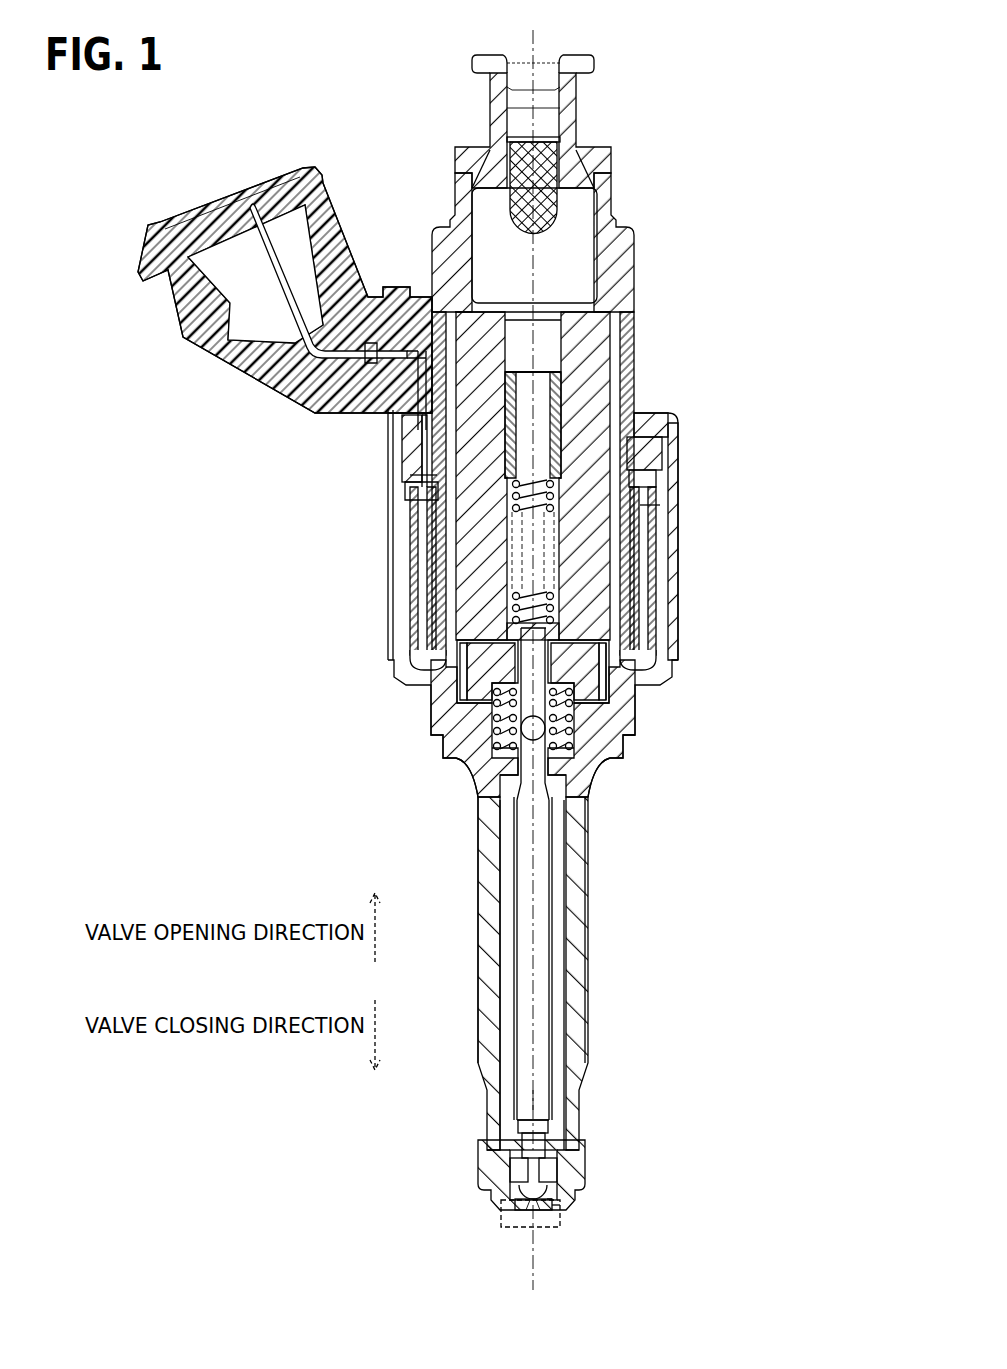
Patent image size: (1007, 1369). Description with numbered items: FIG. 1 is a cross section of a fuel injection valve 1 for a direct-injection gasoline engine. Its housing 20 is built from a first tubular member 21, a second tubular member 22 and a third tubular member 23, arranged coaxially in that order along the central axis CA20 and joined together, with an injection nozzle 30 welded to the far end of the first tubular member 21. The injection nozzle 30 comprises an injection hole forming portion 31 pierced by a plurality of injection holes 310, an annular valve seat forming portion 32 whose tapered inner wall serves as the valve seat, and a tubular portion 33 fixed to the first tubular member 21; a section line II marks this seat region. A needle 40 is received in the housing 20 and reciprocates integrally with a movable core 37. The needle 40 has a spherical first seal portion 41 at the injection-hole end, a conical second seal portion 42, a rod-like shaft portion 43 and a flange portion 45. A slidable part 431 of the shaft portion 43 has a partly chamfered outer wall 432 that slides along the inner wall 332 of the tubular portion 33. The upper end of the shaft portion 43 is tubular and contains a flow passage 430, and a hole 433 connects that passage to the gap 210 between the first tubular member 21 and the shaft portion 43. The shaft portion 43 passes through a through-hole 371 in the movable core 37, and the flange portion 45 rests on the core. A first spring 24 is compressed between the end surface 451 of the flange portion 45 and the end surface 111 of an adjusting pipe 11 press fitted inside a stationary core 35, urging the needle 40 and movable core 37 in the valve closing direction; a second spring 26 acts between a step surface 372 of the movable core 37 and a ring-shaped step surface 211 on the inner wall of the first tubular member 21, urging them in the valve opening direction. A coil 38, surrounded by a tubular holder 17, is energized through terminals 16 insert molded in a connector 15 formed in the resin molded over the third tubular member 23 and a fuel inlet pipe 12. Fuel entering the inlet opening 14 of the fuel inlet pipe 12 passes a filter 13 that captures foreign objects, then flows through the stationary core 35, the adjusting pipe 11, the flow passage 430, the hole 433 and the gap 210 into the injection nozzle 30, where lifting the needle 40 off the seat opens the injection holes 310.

The fuel injection valve 1 is at (649, 116).
The inlet opening 14 is at (545, 55).
The fuel inlet pipe 12 is at (605, 193).
The filter 13 is at (560, 203).
The connector 15 is at (192, 309).
The terminals 16 is at (253, 200).
The holder 17 is at (398, 478).
The stationary core 35 is at (637, 377).
The adjusting pipe 11 is at (660, 432).
The third tubular member 23 is at (655, 457).
The end surface of adjusting pipe 111 is at (603, 507).
The first spring 24 is at (655, 527).
The coil 38 is at (637, 540).
The second tubular member 22 is at (657, 660).
The end surface of flange portion 451 is at (457, 607).
The flange portion 45 is at (427, 637).
The through-hole 371 is at (640, 668).
The movable core 37 is at (620, 672).
The step surface of movable core 372 is at (625, 710).
The second spring 26 is at (640, 763).
The flow passage 430 is at (493, 722).
The step surface 211 is at (492, 745).
The hole 433 is at (522, 786).
The housing 20 is at (612, 873).
The first tubular member 21 is at (574, 1028).
The gap 210 is at (556, 1050).
The needle 40 is at (568, 951).
The shaft portion 43 is at (536, 975).
The central axis CA20 is at (534, 1097).
The injection nozzle 30 is at (598, 1180).
The tubular portion 33 is at (485, 1185).
The slidable part 431 is at (512, 1152).
The outer wall of slidable part 432 is at (497, 1163).
The inner wall of tubular portion 332 is at (548, 1143).
The injection hole forming portion 31 is at (513, 1215).
The valve seat forming portion 32 is at (507, 1212).
The second seal portion 42 is at (548, 1213).
The first seal portion 41 is at (563, 1213).
The injection holes 310 is at (537, 1230).
The section line II is at (502, 1225).